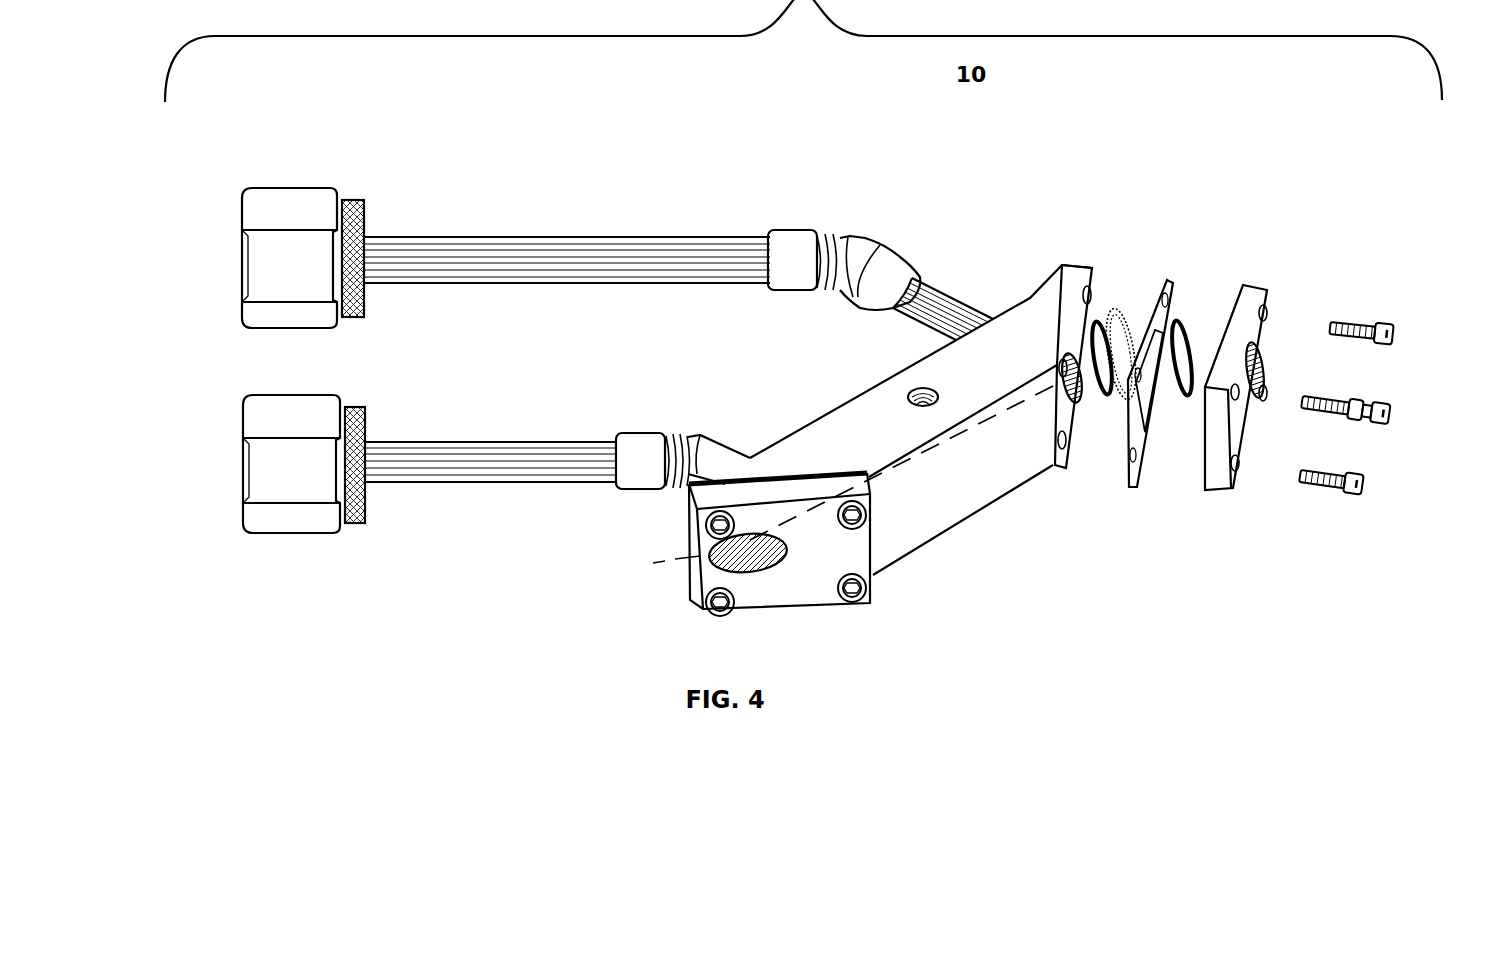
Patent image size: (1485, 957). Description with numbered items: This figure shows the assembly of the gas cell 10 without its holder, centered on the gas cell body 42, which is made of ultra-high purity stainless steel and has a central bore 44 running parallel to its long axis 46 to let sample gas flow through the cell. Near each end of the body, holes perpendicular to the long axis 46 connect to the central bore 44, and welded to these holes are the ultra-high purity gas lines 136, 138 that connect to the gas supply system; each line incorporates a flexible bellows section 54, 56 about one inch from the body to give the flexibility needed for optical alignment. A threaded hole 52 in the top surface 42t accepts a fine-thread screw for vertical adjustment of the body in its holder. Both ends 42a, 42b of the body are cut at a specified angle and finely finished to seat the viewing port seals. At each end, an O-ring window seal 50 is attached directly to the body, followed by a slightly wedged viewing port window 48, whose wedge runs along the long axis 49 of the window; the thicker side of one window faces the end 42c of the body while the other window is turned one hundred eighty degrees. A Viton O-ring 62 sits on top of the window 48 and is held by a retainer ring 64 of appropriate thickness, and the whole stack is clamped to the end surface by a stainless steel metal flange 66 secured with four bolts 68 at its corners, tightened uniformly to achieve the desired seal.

The gas cell 10 is at (978, 92).
The gas line 138 is at (487, 238).
The gas line 136 is at (500, 482).
The bellows section 56 is at (790, 245).
The bellows section 54 is at (620, 487).
The gas cell body 42 is at (892, 377).
The top surface 42t is at (830, 410).
The end 42a is at (815, 470).
The end 42b is at (1085, 290).
The end of the gas cell body 42c is at (1075, 263).
The threaded hole 52 is at (918, 390).
The long axis 46 is at (970, 425).
The central bore 44 is at (748, 570).
The viewing port window 48 is at (700, 575).
The long axis of the window 49 is at (1072, 352).
The bolt 68 is at (867, 516).
The window seal 50 is at (1125, 310).
The retainer ring 64 is at (1175, 288).
The O-ring 62 is at (1220, 300).
The metal flange 66 is at (1262, 305).